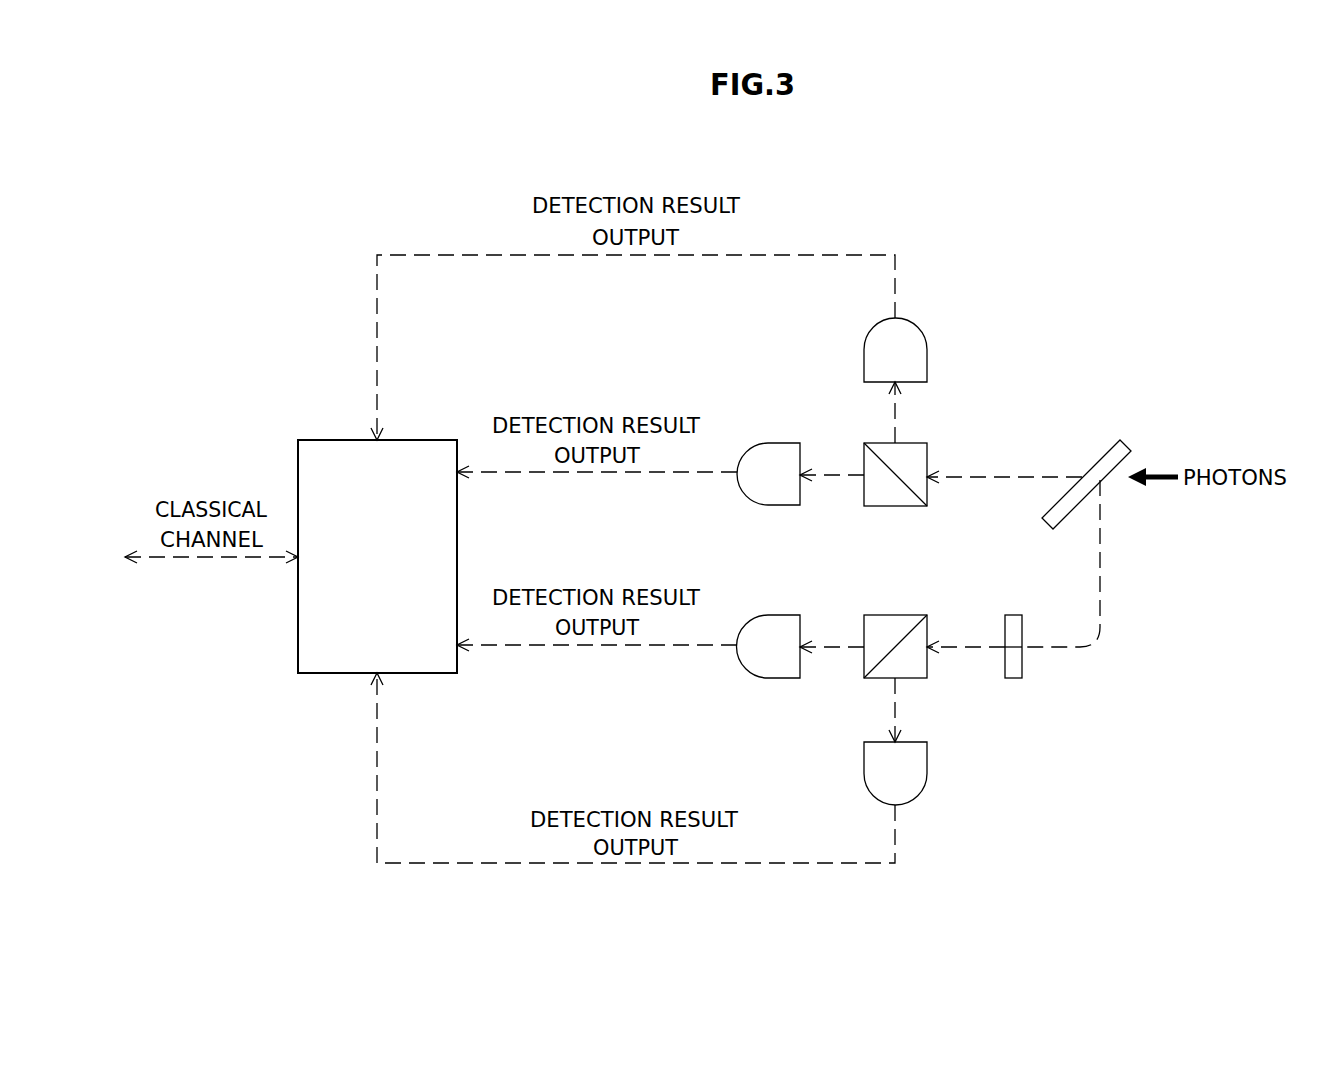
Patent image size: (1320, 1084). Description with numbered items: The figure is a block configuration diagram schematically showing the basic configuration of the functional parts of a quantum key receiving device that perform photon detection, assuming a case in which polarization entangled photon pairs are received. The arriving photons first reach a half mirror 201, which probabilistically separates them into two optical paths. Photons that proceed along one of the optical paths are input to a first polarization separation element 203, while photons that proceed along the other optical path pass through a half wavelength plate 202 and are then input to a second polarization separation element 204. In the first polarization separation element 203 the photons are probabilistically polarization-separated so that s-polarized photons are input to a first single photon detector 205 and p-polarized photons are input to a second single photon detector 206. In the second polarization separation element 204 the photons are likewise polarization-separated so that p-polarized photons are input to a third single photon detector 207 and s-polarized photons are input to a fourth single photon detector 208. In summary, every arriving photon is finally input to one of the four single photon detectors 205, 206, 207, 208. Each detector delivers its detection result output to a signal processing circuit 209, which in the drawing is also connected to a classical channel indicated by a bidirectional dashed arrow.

The half mirror 201 is at (1094, 460).
The ½ wavelength plate 202 is at (1012, 615).
The first polarization separation element 203 is at (915, 443).
The second polarization separation element 204 is at (915, 678).
The (1-1) single photon detector 205 is at (927, 338).
The (1-2) single photon detector 206 is at (782, 443).
The (2-1) single photon detector 207 is at (782, 678).
The (2-2) single photon detector 208 is at (927, 785).
The signal processing circuit 209 is at (414, 440).